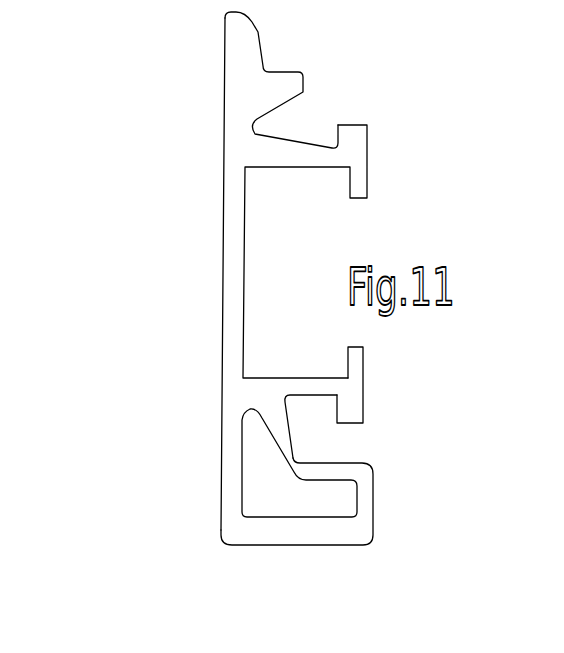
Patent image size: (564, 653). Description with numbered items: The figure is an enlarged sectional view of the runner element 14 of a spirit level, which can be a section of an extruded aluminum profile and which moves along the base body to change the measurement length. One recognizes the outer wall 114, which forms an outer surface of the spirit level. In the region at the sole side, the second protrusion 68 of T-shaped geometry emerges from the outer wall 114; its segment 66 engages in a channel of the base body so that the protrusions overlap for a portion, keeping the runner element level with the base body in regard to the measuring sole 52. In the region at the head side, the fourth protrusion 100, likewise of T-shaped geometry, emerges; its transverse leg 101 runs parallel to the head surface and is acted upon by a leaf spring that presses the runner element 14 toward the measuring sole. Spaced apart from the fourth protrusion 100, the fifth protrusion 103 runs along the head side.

The runner element 14 is at (176, 1).
The measuring sole 52 is at (297, 547).
The segment 66 is at (352, 391).
The second protrusion 68 is at (288, 410).
The fourth protrusion 100 is at (287, 152).
The transverse leg 101 is at (357, 154).
The fifth protrusion 103 is at (281, 88).
The outer wall 114 is at (230, 285).